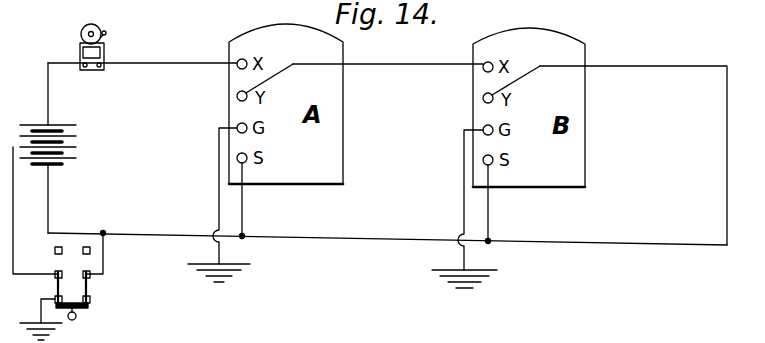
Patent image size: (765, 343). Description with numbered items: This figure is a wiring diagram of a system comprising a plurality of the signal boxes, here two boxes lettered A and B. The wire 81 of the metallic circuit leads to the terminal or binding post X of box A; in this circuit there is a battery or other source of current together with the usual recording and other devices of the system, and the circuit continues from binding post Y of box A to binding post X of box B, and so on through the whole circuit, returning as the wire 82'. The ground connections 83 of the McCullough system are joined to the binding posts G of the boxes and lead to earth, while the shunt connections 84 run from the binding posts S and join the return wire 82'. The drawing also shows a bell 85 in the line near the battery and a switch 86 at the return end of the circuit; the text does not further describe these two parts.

The wire of the metallic circuit 81 is at (132, 63).
The return wire 82' is at (387, 244).
The ground connections 83 is at (219, 200).
The shunt connections 84 is at (245, 210).
The bell 85 is at (105, 30).
The switch 86 is at (88, 291).